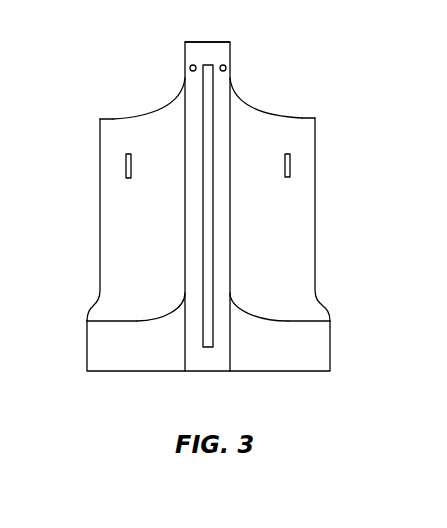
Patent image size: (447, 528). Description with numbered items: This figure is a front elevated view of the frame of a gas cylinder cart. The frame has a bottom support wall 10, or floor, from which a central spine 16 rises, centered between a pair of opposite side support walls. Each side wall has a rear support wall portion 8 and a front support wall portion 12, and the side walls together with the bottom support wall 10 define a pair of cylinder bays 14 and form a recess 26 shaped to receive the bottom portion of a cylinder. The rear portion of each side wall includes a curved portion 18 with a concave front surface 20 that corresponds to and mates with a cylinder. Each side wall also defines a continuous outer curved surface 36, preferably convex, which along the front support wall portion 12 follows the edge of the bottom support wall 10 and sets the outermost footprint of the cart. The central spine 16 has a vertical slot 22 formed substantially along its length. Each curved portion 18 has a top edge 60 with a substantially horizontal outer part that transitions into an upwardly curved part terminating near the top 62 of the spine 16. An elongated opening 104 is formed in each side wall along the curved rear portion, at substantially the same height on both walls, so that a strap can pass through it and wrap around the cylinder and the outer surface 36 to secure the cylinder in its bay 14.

The rear support wall portion 8 is at (148, 128).
The bottom support wall 10 is at (124, 375).
The front support wall portion 12 is at (167, 353).
The cylinder bay 14 is at (136, 212).
The central spine 16 is at (226, 92).
The curved portion 18 is at (304, 130).
The concave front surface 20 is at (115, 192).
The vertical slot 22 is at (214, 150).
The recess 26 is at (137, 320).
The outer curved surface 36 is at (120, 340).
The top edge 60 is at (112, 119).
The top 62 is at (200, 41).
The opening 104 is at (126, 167).